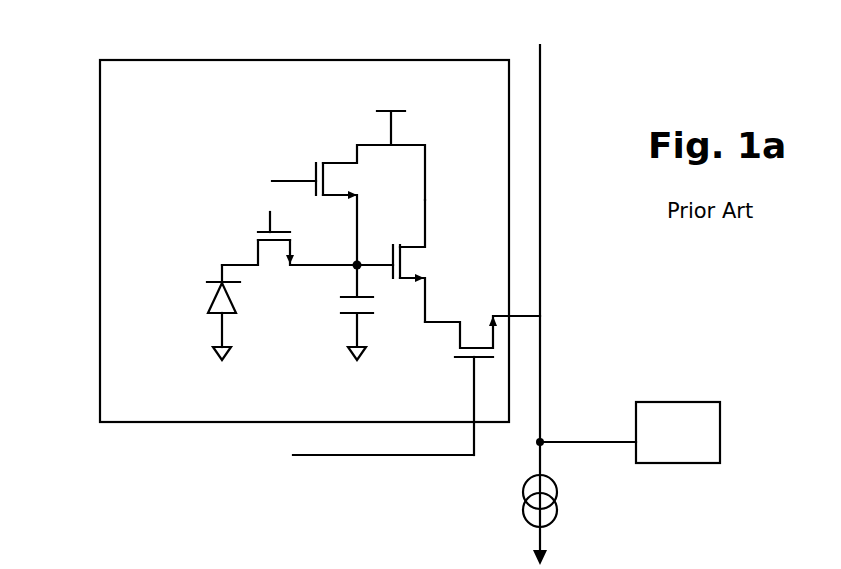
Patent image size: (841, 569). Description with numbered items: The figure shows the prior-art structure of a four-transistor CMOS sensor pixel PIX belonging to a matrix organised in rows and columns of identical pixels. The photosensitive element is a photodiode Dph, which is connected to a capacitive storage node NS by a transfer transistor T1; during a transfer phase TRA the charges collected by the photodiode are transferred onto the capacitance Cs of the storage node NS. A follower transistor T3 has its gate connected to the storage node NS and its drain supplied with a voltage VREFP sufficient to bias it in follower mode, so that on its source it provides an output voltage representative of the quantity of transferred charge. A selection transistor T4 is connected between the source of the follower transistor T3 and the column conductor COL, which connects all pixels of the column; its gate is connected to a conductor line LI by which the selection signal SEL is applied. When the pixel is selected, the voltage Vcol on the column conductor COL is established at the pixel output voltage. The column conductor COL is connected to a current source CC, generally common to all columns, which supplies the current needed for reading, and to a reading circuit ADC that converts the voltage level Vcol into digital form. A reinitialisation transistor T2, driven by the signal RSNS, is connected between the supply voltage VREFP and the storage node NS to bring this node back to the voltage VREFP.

The pixel PIX is at (113, 88).
The column conductor COL is at (540, 55).
The supply voltage VREFP is at (394, 113).
The reinitialisation signal of the storage node RSNS is at (283, 165).
The reinitialisation transistor T2 is at (333, 157).
The follower transistor T3 is at (423, 262).
The selection transistor T4 is at (478, 338).
The selection signal SEL is at (446, 406).
The conductor line LI is at (382, 457).
The transfer phase TRA is at (245, 214).
The transfer transistor T1 is at (273, 268).
The capacitive storage node NS is at (348, 259).
The photodiode Dph is at (211, 297).
The capacitance of the storage node Cs is at (348, 318).
The column voltage level Vcol is at (586, 428).
The reading circuit ADC is at (678, 432).
The current source CC is at (512, 528).